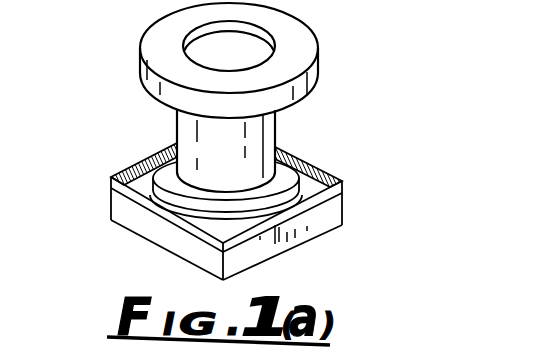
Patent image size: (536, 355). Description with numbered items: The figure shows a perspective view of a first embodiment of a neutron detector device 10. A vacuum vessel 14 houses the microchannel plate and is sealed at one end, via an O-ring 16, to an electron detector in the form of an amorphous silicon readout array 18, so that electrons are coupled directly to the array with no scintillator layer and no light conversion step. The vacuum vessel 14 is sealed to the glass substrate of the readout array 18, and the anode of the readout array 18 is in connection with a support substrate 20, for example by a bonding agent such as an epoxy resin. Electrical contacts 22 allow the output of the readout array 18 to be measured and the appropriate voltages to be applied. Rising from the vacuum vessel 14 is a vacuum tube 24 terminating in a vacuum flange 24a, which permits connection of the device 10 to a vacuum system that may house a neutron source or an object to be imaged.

The device 10 is at (88, 56).
The vacuum vessel 14 is at (154, 194).
The O-ring 16 is at (231, 222).
The amorphous silicon readout array 18 is at (160, 193).
The support substrate 20 is at (143, 225).
The electrical contacts 22 is at (320, 173).
The vacuum tube 24 is at (193, 132).
The vacuum flange 24a is at (302, 47).